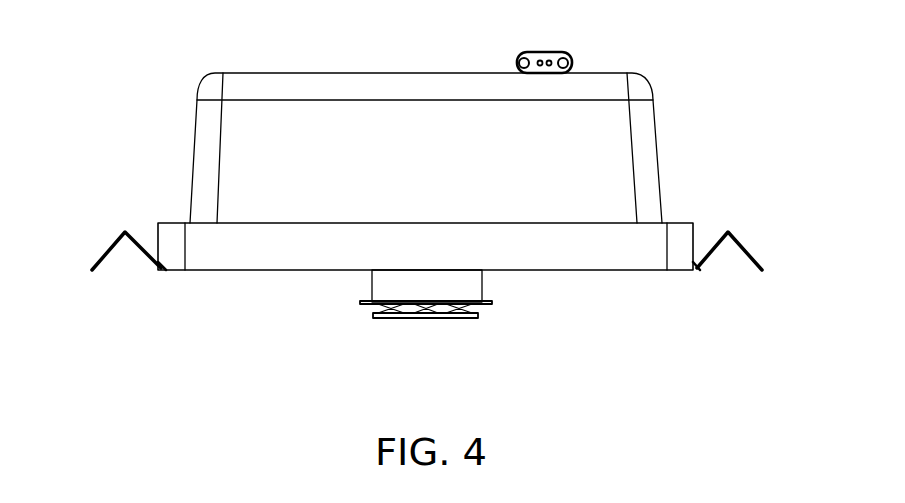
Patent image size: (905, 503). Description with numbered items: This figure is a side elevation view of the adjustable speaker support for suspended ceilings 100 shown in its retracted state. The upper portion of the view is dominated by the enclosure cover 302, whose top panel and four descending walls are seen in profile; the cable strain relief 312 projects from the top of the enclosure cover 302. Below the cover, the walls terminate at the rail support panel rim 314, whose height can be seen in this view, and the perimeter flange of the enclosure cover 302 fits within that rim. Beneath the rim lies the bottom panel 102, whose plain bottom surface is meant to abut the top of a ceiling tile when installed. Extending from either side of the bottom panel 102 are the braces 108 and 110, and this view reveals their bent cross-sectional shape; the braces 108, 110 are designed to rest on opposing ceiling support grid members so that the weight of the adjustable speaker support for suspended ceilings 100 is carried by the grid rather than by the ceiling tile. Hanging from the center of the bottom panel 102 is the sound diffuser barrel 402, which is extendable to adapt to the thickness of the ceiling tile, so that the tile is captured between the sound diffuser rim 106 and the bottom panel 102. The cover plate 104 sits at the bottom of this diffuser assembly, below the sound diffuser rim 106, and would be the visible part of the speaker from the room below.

The adjustable speaker support for suspended ceilings 100 is at (146, 24).
The bottom panel 102 is at (575, 273).
The cover plate 104 is at (418, 318).
The sound diffuser rim 106 is at (490, 304).
The brace 108 is at (742, 243).
The brace 110 is at (112, 240).
The enclosure cover 302 is at (322, 172).
The cable strain relief 312 is at (549, 53).
The rail support panel rim 314 is at (158, 223).
The sound diffuser barrel 402 is at (367, 278).